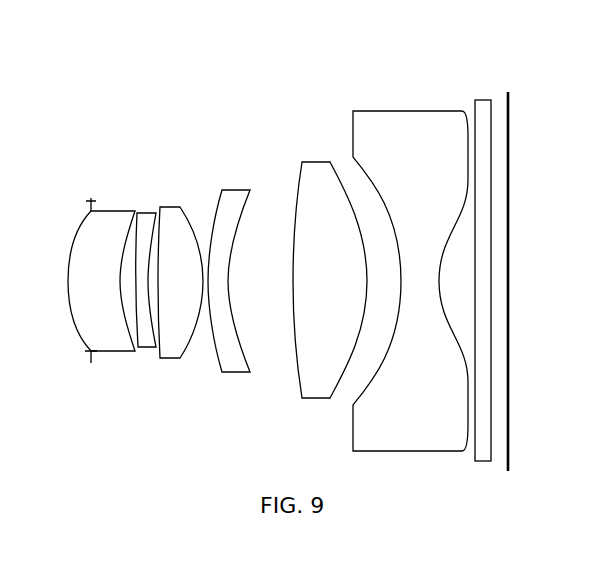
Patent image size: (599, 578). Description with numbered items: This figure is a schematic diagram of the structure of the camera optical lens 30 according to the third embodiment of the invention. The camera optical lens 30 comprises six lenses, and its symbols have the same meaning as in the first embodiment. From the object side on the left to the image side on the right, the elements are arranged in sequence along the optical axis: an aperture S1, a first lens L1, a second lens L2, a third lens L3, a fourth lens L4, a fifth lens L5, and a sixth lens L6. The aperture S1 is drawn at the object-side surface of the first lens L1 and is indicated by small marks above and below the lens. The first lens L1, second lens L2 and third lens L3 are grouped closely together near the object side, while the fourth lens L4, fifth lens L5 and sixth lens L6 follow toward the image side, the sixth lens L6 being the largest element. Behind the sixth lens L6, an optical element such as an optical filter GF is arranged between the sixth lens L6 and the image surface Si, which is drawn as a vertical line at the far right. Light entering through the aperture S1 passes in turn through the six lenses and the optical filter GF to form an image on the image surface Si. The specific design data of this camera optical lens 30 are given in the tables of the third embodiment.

The camera optical lens 30 is at (303, 35).
The aperture S1 is at (81, 274).
The first lens L1 is at (101, 266).
The second lens L2 is at (148, 263).
The third lens L3 is at (180, 266).
The fourth lens L4 is at (229, 262).
The fifth lens L5 is at (330, 262).
The sixth lens L6 is at (410, 261).
The optical filter GF is at (479, 264).
The image surface Si is at (510, 265).